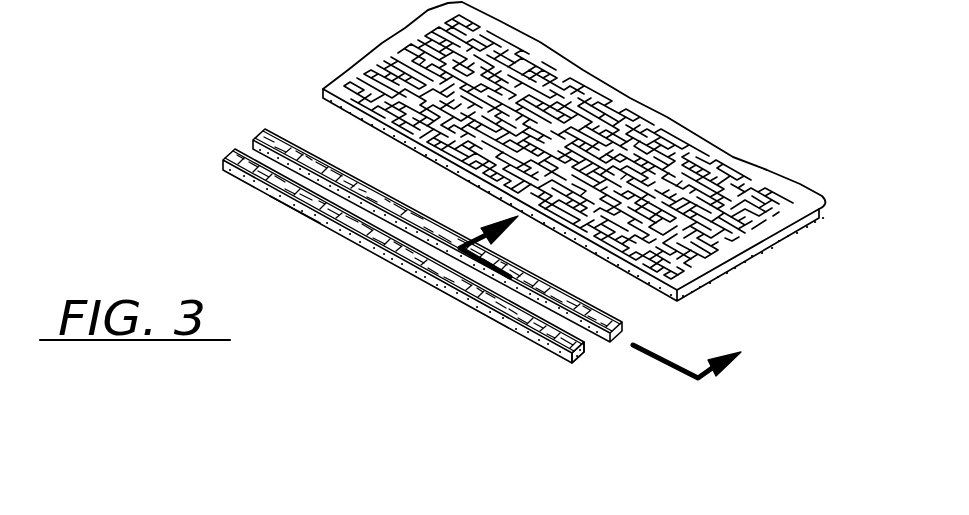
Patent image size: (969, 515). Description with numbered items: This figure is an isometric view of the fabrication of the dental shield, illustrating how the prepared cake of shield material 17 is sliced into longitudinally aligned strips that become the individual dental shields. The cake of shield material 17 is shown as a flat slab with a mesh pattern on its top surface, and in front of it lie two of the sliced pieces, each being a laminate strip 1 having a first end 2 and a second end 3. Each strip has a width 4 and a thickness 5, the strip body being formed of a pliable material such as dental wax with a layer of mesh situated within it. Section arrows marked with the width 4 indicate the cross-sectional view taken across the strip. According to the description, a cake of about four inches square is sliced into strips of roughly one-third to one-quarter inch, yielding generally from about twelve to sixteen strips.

The laminate strip 1 is at (405, 273).
The first end 2 is at (588, 360).
The second end 3 is at (227, 152).
The width 4 is at (550, 423).
The thickness 5 is at (308, 228).
The cake of shield material 17 is at (323, 88).